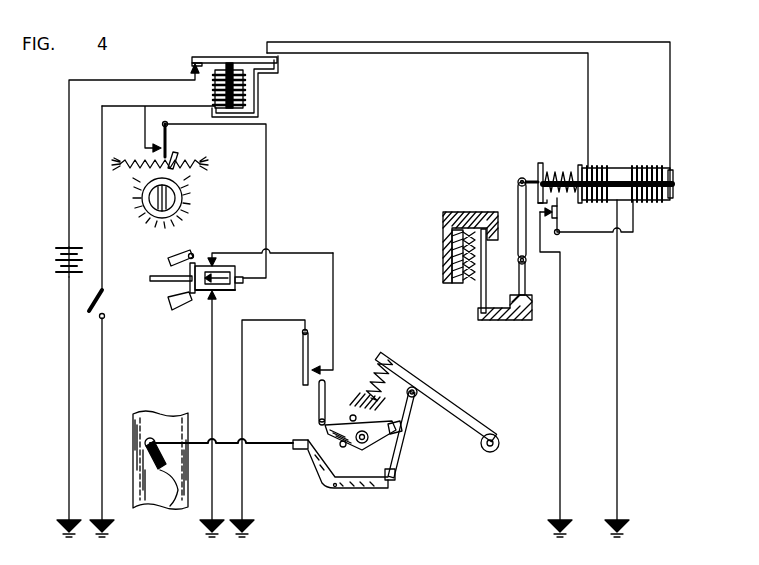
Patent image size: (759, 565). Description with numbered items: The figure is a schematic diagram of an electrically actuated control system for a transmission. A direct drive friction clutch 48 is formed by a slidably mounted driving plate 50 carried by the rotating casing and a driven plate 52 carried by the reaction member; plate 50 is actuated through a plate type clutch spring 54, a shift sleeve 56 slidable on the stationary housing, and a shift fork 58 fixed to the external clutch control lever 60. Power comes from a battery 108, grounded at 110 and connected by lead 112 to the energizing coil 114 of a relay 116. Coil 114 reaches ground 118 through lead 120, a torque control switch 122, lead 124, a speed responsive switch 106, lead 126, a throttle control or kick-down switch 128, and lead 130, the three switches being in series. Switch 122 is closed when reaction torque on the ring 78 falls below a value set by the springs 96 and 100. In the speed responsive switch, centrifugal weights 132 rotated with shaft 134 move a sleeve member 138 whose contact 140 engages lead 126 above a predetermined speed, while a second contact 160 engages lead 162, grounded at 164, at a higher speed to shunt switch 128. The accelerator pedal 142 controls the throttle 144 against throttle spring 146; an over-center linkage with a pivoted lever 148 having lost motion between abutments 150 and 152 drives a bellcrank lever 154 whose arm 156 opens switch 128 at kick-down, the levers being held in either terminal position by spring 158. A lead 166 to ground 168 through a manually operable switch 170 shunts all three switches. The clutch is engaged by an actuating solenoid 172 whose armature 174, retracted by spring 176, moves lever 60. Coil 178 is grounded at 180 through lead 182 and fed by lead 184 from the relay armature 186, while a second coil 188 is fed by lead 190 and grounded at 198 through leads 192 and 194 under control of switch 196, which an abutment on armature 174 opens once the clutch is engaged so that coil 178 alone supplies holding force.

The direct drive friction clutch 48 is at (443, 223).
The driving plate 50 is at (452, 268).
The driven plate 52 is at (456, 290).
The plate type clutch spring 54 is at (485, 282).
The shift sleeve 56 is at (480, 320).
The shift fork 58 is at (527, 282).
The external clutch control lever 60 is at (518, 196).
The reaction torque responsive ring 78 is at (184, 193).
The spring 96 is at (205, 160).
The spring 100 is at (140, 181).
The speed responsive switch 106 is at (166, 289).
The battery 108 is at (66, 276).
The ground 110 is at (64, 534).
The lead 112 is at (118, 80).
The energizing coil 114 is at (246, 86).
The relay 116 is at (229, 63).
The ground 118 is at (254, 534).
The lead 120 is at (192, 106).
The torque control switch 122 is at (170, 135).
The lead 124 is at (268, 202).
The lead 126 is at (335, 323).
The throttle control switch 128 is at (302, 357).
The lead 130 is at (243, 388).
The centrifugal weights 132 is at (180, 252).
The shaft 134 is at (154, 276).
The sleeve member 138 is at (208, 292).
The contact 140 is at (226, 266).
The accelerator pedal 142 is at (457, 404).
The throttle 144 is at (172, 503).
The throttle spring 146 is at (366, 372).
The pivoted lever 148 is at (404, 443).
The abutment 150 is at (403, 422).
The abutment 152 is at (396, 462).
The bellcrank lever 154 is at (320, 424).
The arm 156 is at (317, 407).
The spring 158 is at (333, 447).
The second contact 160 is at (237, 290).
The lead 162 is at (210, 362).
The ground 164 is at (214, 534).
The lead 166 is at (104, 240).
The ground 168 is at (103, 535).
The manually operable switch 170 is at (100, 300).
The actuating solenoid 172 is at (627, 169).
The armature 174 is at (540, 170).
The spring 176 is at (576, 168).
The coil 178 is at (609, 166).
The ground 180 is at (626, 534).
The lead 182 is at (619, 385).
The lead 184 is at (428, 53).
The armature 186 is at (214, 57).
The second coil 188 is at (652, 200).
The lead 190 is at (561, 43).
The lead 192 is at (570, 238).
The lead 194 is at (558, 346).
The switch 196 is at (560, 213).
The ground 198 is at (556, 534).